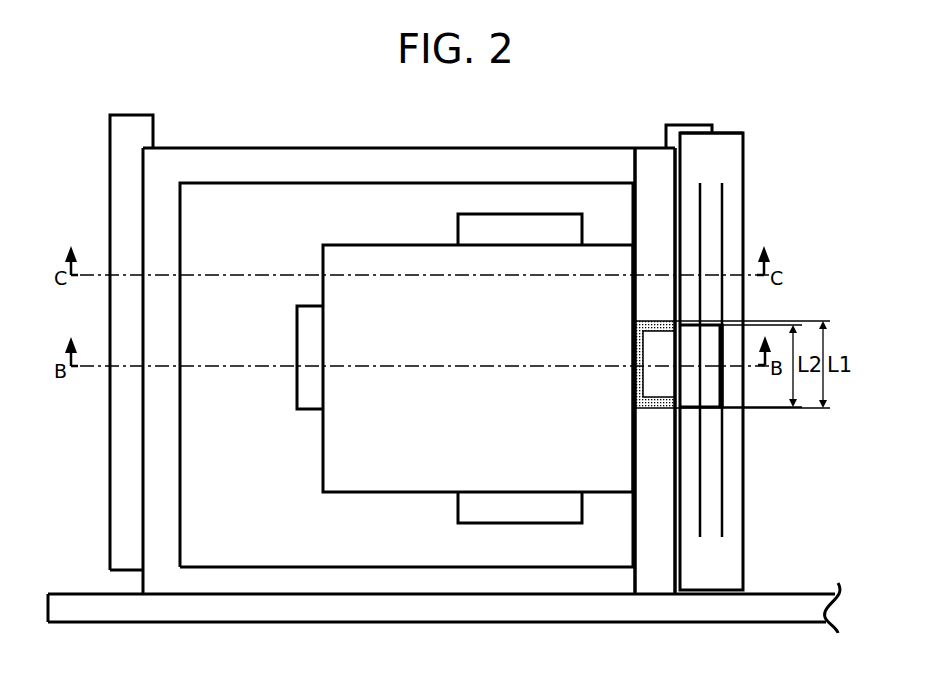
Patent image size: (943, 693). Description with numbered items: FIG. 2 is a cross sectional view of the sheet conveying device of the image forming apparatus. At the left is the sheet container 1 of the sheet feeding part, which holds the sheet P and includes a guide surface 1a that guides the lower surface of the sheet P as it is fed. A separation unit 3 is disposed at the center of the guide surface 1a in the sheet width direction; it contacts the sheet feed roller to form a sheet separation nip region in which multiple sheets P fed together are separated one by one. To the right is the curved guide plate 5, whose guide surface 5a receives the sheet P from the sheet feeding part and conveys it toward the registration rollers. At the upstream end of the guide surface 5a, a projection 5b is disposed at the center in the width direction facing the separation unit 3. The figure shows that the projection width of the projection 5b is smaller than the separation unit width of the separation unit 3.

The sheet container 1 is at (158, 530).
The guide surface 1a is at (641, 547).
The separation unit 3 is at (653, 338).
The curved guide plate 5 is at (738, 563).
The guide surface 5a is at (742, 229).
The projection 5b is at (713, 396).
The sheet P is at (337, 299).